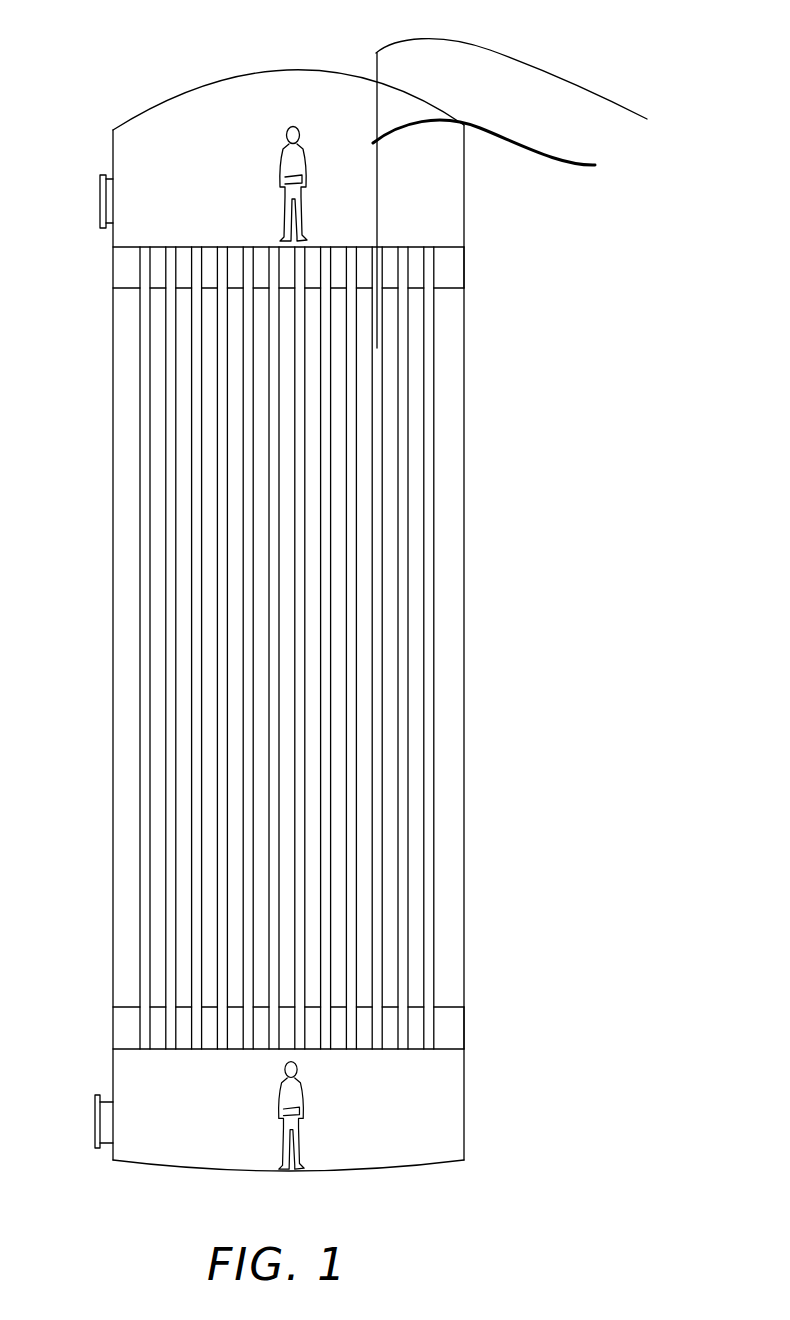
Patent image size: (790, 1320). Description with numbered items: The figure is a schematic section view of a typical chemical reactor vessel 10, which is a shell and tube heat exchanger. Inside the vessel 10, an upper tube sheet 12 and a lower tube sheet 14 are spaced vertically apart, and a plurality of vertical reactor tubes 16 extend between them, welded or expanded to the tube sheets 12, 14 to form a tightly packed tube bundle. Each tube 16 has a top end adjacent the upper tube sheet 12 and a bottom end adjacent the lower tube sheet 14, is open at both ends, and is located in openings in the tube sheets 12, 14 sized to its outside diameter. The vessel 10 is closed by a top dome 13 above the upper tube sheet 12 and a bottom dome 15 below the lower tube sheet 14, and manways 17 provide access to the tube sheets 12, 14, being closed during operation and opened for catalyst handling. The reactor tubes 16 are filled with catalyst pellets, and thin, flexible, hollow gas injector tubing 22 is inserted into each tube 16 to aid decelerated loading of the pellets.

The chemical reactor vessel 10 is at (337, 629).
The upper tube sheet 12 is at (466, 262).
The top dome 13 is at (150, 102).
The lower tube sheet 14 is at (465, 1025).
The bottom dome 15 is at (465, 1162).
The reactor tubes 16 is at (360, 590).
The manways 17 is at (100, 220).
The gas injector tubing 22 is at (504, 150).